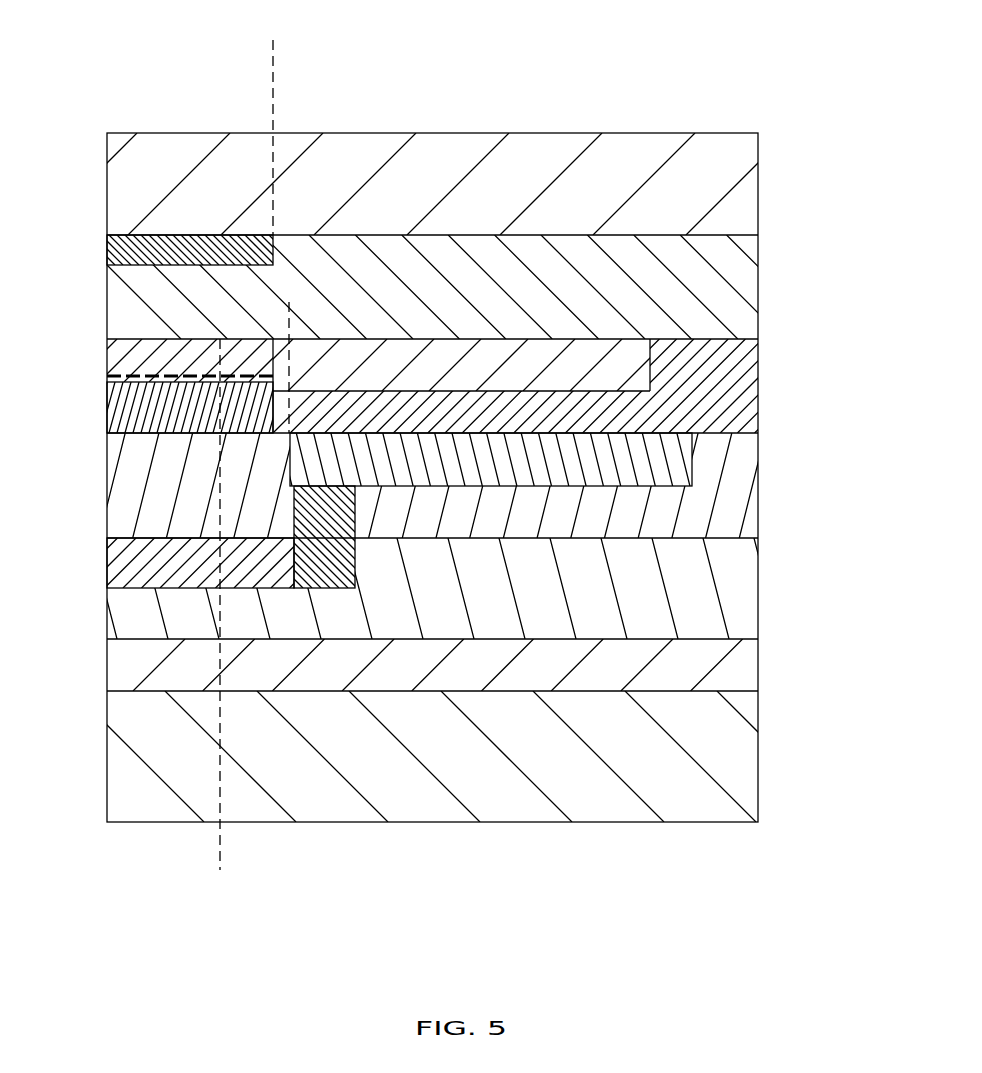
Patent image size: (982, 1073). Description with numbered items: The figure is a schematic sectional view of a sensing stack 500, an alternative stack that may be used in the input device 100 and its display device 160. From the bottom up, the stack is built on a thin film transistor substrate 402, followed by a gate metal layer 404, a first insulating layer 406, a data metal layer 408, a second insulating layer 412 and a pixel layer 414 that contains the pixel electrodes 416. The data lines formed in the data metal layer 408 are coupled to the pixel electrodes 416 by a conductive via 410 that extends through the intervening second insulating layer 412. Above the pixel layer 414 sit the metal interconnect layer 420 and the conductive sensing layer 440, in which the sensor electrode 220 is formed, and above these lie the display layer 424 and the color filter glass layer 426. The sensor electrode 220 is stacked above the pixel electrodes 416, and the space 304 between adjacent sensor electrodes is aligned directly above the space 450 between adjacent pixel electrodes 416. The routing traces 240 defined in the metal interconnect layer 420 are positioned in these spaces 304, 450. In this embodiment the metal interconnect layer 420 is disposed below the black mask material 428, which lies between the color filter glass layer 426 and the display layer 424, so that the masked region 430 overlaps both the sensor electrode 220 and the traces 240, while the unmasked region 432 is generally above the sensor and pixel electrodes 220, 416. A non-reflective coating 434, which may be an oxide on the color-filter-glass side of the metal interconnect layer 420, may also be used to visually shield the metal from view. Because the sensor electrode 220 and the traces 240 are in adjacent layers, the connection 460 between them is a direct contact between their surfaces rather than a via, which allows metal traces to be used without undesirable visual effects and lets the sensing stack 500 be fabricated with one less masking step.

The input device 100 is at (703, 73).
The display device 160 is at (793, 240).
The sensor electrode 220 is at (645, 370).
The routing traces 240 is at (117, 416).
The space between adjacent sensor electrodes 304 is at (220, 863).
The thin film transistor substrate 402 is at (452, 775).
The gate metal layer 404 is at (452, 676).
The first insulating layer 406 is at (452, 609).
The data metal layer 408 is at (112, 546).
The conductive via 410 is at (347, 567).
The second insulating layer 412 is at (445, 419).
The pixel layer 414 is at (688, 455).
The pixel electrodes 416 is at (448, 467).
The metal interconnect layer 420 is at (110, 376).
The display layer 424 is at (444, 302).
The color filter glass layer 426 is at (444, 202).
The black mask material 428 is at (109, 242).
The masked region 430 is at (273, 48).
The unmasked region 432 is at (273, 48).
The non-reflective coating 434 is at (111, 353).
The conductive sensing layer 440 is at (640, 352).
The space between adjacent pixel electrodes 450 is at (289, 318).
The connection 460 is at (258, 377).
The sensing stack 500 is at (770, 533).